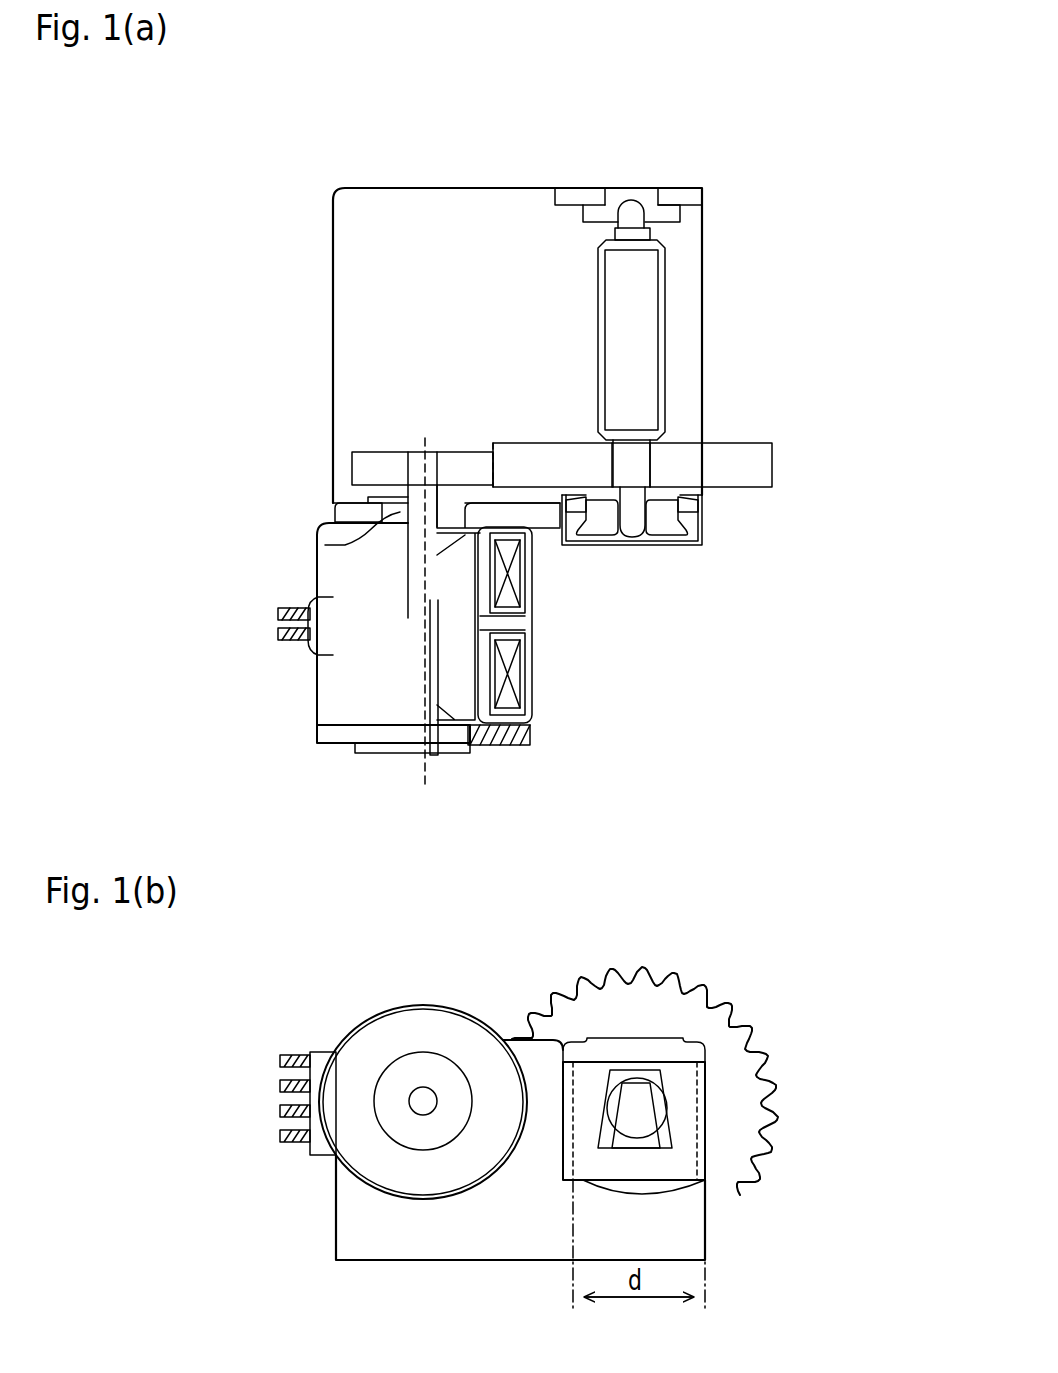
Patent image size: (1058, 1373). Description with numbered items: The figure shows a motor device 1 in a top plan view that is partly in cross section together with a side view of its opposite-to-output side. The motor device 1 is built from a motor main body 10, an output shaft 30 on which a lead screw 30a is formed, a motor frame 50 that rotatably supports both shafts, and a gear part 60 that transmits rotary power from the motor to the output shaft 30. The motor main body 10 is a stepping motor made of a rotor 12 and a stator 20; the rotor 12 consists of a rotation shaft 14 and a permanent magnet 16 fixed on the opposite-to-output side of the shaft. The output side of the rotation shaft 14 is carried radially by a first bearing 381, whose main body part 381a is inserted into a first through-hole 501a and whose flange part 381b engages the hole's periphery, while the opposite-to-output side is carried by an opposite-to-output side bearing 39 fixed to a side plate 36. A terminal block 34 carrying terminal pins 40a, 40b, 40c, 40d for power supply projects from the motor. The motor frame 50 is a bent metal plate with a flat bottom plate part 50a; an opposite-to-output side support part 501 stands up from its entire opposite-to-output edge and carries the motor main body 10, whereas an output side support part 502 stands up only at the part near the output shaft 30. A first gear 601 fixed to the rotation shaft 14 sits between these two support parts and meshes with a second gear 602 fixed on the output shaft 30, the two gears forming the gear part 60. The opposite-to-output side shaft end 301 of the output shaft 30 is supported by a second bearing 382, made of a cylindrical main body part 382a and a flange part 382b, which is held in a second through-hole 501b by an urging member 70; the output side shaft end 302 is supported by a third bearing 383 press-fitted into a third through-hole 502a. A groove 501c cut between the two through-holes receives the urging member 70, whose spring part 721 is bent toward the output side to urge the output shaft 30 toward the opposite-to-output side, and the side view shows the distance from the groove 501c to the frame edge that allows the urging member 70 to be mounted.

In FIG. 1A, the motor device 1 is at (300, 176).
In FIG. 1A, the motor main body 10 is at (531, 762).
In FIG. 1B, the motor main body 10 is at (356, 1012).
In FIG. 1A, the rotor 12 is at (240, 580).
In FIG. 1A, the rotation shaft 14 is at (420, 583).
In FIG. 1B, the rotation shaft 14 is at (430, 1110).
In FIG. 1A, the permanent magnet 16 is at (452, 657).
In FIG. 1A, the stator 20 is at (542, 657).
In FIG. 1A, the output shaft 30 is at (702, 360).
In FIG. 1A, the lead screw 30a is at (663, 310).
In FIG. 1A, the opposite-to-output side shaft end 301 is at (700, 470).
In FIG. 1B, the opposite-to-output side shaft end 301 is at (662, 1087).
In FIG. 1A, the output side shaft end 302 is at (640, 233).
In FIG. 1B, the terminal block 34 is at (314, 1160).
In FIG. 1A, the side plate 36 is at (351, 744).
In FIG. 1B, the side plate 36 is at (400, 1027).
In FIG. 1A, the first bearing 381 is at (274, 526).
In FIG. 1A, the main body part 381a is at (345, 545).
In FIG. 1A, the flange part 381b is at (380, 514).
In FIG. 1A, the second bearing 382 is at (741, 502).
In FIG. 1A, the cylindrical main body part 382a is at (688, 505).
In FIG. 1A, the flange part 382b is at (682, 536).
In FIG. 1A, the third bearing 383 is at (645, 190).
In FIG. 1A, the opposite-to-output side bearing 39 is at (463, 746).
In FIG. 1B, the opposite-to-output side bearing 39 is at (445, 1070).
In FIG. 1B, the terminal pin 40a is at (280, 1061).
In FIG. 1B, the terminal pin 40b is at (280, 1086).
In FIG. 1B, the terminal pin 40c is at (280, 1111).
In FIG. 1B, the terminal pin 40d is at (280, 1136).
In FIG. 1A, the motor frame 50 is at (326, 326).
In FIG. 1B, the motor frame 50 is at (400, 1265).
In FIG. 1A, the bottom plate part 50a is at (420, 200).
In FIG. 1A, the opposite-to-output side support part 501 is at (372, 500).
In FIG. 1A, the first through-hole 501a is at (420, 618).
In FIG. 1A, the second through-hole 501b is at (636, 522).
In FIG. 1A, the groove 501c is at (585, 527).
In FIG. 1B, the groove 501c is at (563, 1045).
In FIG. 1A, the output side support part 502 is at (565, 190).
In FIG. 1A, the third through-hole 502a is at (612, 192).
In FIG. 1A, the gear part 60 is at (562, 403).
In FIG. 1A, the first gear 601 is at (470, 458).
In FIG. 1A, the second gear 602 is at (632, 428).
In FIG. 1B, the second gear 602 is at (640, 975).
In FIG. 1A, the urging member 70 is at (702, 547).
In FIG. 1B, the urging member 70 is at (682, 1182).
In FIG. 1B, the spring part 721 is at (652, 1117).